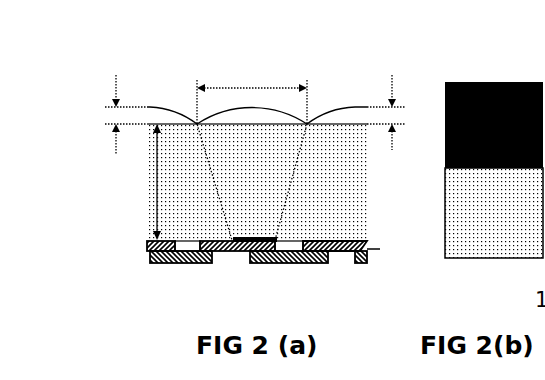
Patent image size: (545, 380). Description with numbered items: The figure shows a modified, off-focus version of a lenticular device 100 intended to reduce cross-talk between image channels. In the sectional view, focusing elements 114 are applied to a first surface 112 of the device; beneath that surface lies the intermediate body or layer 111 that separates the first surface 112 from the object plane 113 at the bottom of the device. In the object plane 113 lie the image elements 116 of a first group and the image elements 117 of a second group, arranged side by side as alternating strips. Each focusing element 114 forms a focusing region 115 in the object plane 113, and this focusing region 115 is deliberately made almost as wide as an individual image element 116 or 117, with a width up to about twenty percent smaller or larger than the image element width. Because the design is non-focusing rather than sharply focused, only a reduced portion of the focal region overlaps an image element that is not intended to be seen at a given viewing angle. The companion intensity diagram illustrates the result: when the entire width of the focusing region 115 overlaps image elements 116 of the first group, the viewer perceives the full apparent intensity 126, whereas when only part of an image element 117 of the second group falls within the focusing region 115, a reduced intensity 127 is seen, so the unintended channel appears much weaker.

In FIG. 2A, the lenticular device 100 is at (110, 63).
In FIG. 2A, the substrate 111 is at (165, 200).
In FIG. 2A, the first surface 112 is at (182, 125).
In FIG. 2A, the object plane 113 is at (190, 241).
In FIG. 2A, the focusing elements 114 is at (176, 110).
In FIG. 2A, the focusing region 115 is at (258, 236).
In FIG. 2A, the image elements of a first group 116 is at (148, 242).
In FIG. 2A, the image elements of a second group 117 is at (170, 265).
In FIG. 2B, the apparent intensity 126 is at (488, 82).
In FIG. 2B, the reduced intensity 127 is at (478, 228).